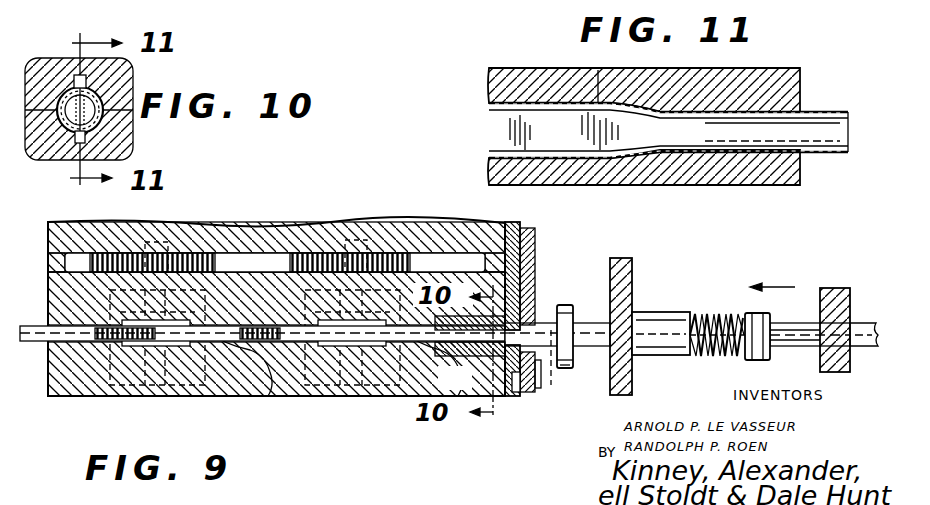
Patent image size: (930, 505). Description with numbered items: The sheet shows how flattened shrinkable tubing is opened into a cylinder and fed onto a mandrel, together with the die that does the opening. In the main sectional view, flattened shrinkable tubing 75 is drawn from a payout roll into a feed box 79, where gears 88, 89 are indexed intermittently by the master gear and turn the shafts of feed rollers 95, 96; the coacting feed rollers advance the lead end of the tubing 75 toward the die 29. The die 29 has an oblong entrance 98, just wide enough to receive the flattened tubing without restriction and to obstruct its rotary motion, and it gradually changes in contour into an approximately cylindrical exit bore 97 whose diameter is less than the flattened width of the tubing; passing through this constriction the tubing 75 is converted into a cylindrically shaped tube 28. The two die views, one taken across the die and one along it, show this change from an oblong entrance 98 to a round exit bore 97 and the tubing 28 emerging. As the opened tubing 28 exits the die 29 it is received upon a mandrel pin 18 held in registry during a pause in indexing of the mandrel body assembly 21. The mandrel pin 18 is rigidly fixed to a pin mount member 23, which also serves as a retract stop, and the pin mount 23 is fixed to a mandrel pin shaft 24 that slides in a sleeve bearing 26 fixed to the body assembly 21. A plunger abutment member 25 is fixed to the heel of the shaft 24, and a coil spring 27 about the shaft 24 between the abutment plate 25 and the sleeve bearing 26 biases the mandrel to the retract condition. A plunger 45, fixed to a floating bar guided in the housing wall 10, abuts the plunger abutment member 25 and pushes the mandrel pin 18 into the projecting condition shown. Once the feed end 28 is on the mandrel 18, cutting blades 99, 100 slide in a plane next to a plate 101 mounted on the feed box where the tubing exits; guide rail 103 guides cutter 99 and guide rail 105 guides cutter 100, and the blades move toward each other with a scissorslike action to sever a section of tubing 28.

In FIG. 9, the housing wall 10 is at (842, 290).
In FIG. 9, the mandrel pin 18 is at (564, 361).
In FIG. 9, the mandrel body assembly 21 is at (633, 386).
In FIG. 9, the pin mount member 23 is at (574, 368).
In FIG. 9, the mandrel pin shaft 24 is at (718, 357).
In FIG. 9, the plunger abutment member 25 is at (752, 361).
In FIG. 9, the sleeve bearing 26 is at (660, 318).
In FIG. 9, the coil spring 27 is at (711, 316).
In FIG. 10, the shrinkable tubing 28 is at (134, 82).
In FIG. 11, the shrinkable tubing 28 is at (822, 155).
In FIG. 9, the shrinkable tubing 28 is at (541, 328).
In FIG. 10, the die 29 is at (52, 132).
In FIG. 11, the die 29 is at (669, 186).
In FIG. 9, the die 29 is at (486, 356).
In FIG. 9, the plunger 45 is at (797, 330).
In FIG. 10, the flattened shrinkable tubing 75 is at (70, 143).
In FIG. 11, the flattened shrinkable tubing 75 is at (502, 150).
In FIG. 9, the flattened shrinkable tubing 75 is at (38, 341).
In FIG. 9, the feed box 79 is at (62, 296).
In FIG. 9, the gear 88 is at (205, 258).
In FIG. 9, the gear 89 is at (408, 238).
In FIG. 9, the feed roller 95 is at (220, 384).
In FIG. 9, the feed roller 96 is at (284, 386).
In FIG. 10, the exit bore 97 is at (104, 118).
In FIG. 11, the exit bore 97 is at (790, 110).
In FIG. 10, the die entrance 98 is at (80, 76).
In FIG. 11, the die entrance 98 is at (593, 72).
In FIG. 9, the die entrance 98 is at (398, 396).
In FIG. 9, the cutting blade 99 is at (521, 228).
In FIG. 9, the cutting blade 100 is at (530, 398).
In FIG. 9, the plate 101 is at (505, 225).
In FIG. 9, the guide rail 103 is at (536, 262).
In FIG. 9, the guide rail 105 is at (521, 398).